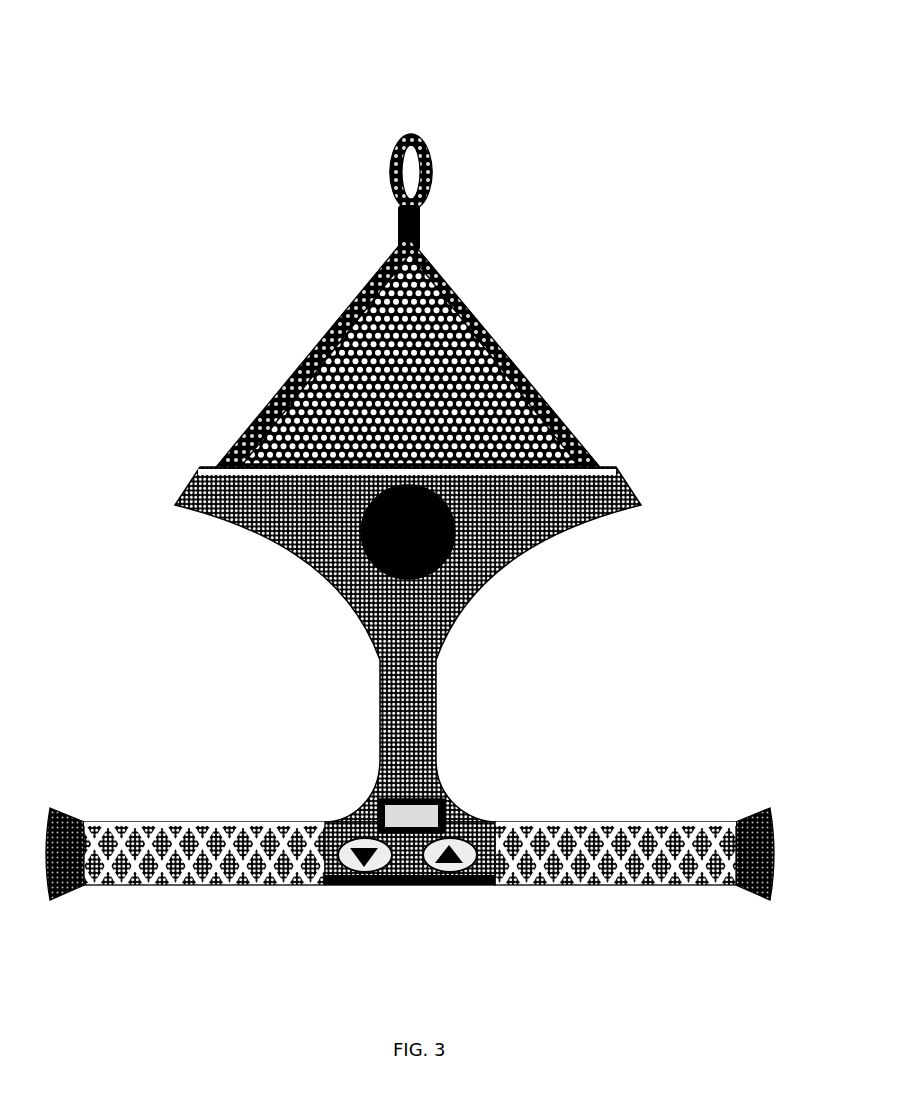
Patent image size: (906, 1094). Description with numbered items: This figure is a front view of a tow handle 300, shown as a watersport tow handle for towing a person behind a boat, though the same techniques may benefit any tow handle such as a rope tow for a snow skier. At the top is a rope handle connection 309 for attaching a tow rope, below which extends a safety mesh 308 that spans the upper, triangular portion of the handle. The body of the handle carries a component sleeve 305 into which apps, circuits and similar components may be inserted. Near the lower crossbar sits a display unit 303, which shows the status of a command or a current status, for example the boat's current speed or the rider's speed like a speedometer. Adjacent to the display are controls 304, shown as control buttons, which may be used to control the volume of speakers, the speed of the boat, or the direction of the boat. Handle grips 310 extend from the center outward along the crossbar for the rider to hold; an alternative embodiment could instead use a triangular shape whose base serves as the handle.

The tow handle 300 is at (733, 43).
The display unit 303 is at (445, 801).
The controls 304 is at (443, 885).
The component sleeve 305 is at (449, 556).
The safety mesh 308 is at (480, 407).
The rope handle connection 309 is at (428, 163).
The handle grips 310 is at (567, 873).